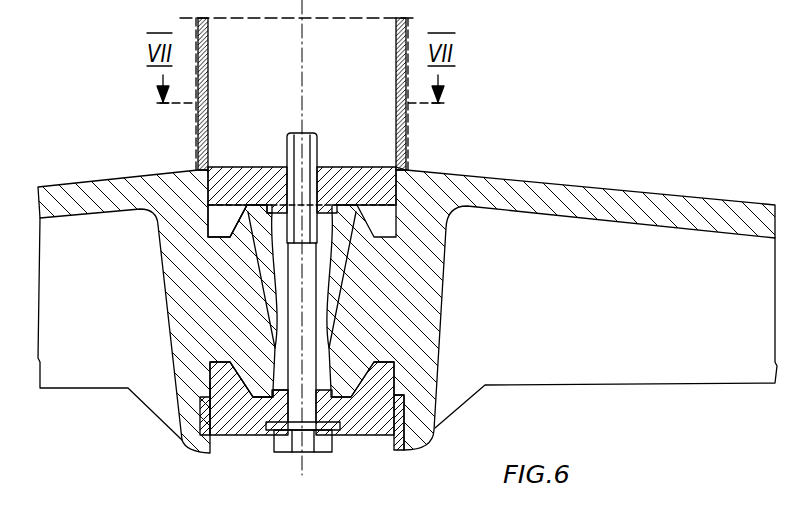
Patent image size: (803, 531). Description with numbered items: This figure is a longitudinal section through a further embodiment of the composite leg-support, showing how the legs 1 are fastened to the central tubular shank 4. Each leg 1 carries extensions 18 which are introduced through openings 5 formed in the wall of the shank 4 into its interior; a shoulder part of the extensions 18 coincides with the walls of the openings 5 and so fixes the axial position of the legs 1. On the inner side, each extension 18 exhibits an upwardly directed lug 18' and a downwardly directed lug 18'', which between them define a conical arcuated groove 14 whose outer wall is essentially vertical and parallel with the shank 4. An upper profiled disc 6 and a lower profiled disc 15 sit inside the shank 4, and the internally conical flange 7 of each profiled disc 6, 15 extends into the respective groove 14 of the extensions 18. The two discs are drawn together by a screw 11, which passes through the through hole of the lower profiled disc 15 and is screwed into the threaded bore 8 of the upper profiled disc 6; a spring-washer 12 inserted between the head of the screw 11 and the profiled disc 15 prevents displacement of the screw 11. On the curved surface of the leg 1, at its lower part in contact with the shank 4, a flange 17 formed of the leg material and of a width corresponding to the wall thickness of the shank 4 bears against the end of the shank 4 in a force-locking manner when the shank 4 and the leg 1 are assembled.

The leg 1 is at (55, 180).
The shank 4 is at (405, 35).
The openings 5 is at (197, 220).
The profiled disc 6 is at (385, 160).
The internally conical flange 7 is at (407, 167).
The threaded bore 8 is at (287, 165).
The screw 11 is at (313, 445).
The spring-washer 12 is at (271, 431).
The conical arcuated groove 14 is at (400, 228).
The profiled disc 15 is at (378, 432).
The flange 17 is at (204, 447).
The extensions 18 is at (302, 280).
The upwardly directed lug 18' is at (244, 169).
The downwardly directed lug 18'' is at (256, 432).